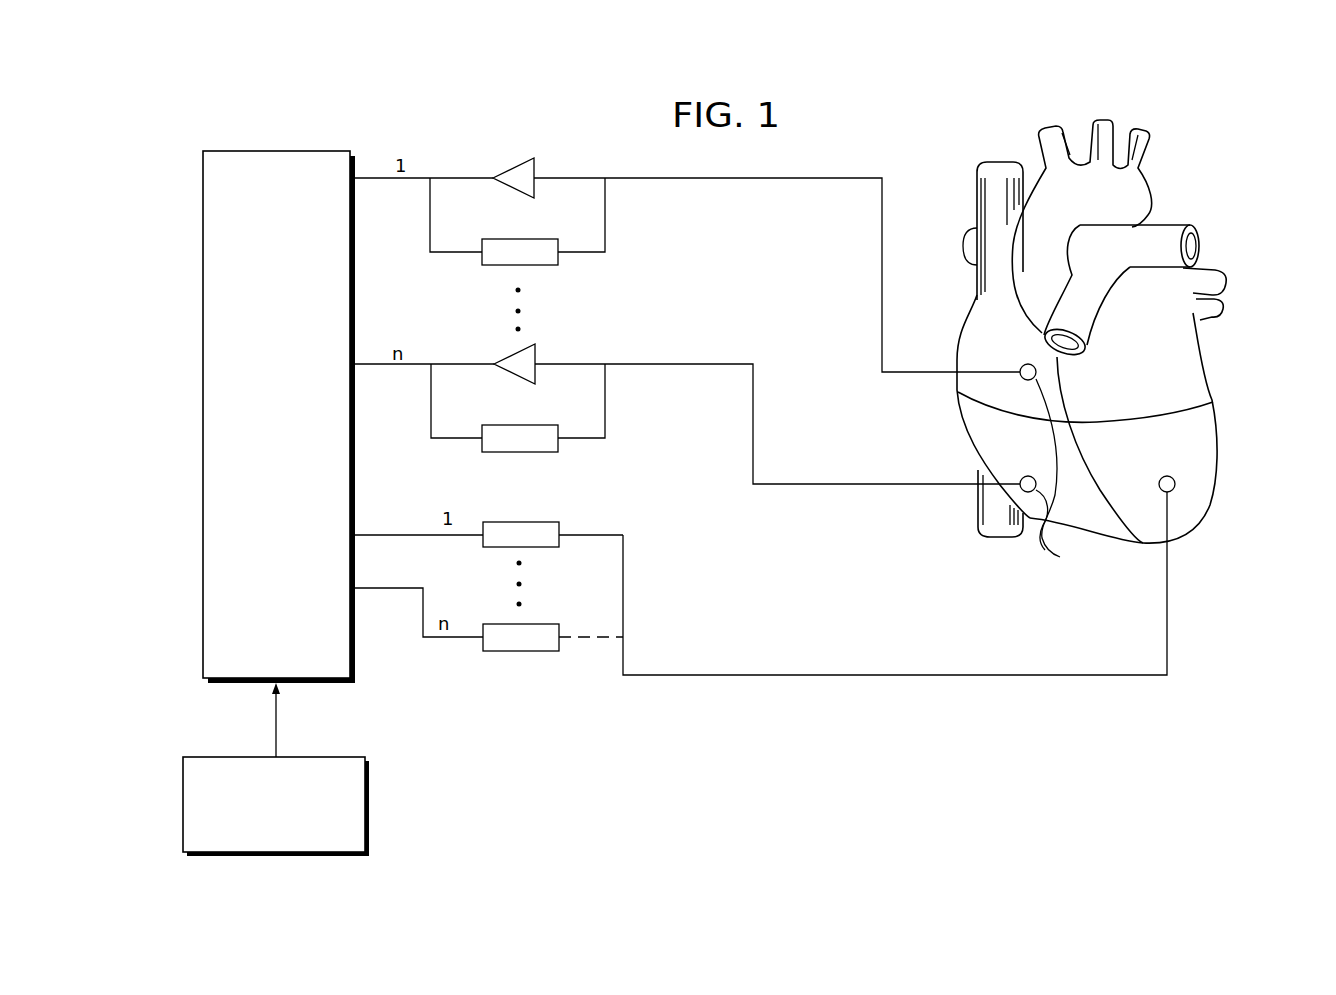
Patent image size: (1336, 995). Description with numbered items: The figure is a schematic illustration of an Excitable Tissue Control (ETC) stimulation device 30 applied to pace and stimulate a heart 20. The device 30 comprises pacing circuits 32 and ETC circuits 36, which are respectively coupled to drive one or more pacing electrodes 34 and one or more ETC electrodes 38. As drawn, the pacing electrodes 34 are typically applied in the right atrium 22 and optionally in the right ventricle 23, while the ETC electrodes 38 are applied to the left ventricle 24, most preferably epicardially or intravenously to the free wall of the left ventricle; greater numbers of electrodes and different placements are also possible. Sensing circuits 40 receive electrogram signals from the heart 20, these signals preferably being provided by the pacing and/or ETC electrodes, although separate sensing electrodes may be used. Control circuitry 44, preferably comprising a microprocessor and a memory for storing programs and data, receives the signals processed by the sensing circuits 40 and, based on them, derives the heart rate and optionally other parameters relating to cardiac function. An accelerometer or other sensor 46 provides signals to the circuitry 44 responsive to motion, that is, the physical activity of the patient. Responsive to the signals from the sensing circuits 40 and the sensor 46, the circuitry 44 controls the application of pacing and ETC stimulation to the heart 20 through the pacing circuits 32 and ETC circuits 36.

The heart 20 is at (1195, 347).
The right atrium 22 is at (1013, 321).
The right ventricle 23 is at (1013, 449).
The left ventricle 24 is at (1147, 462).
The ETC stimulation device 30 is at (250, 135).
The pacing circuits 32 is at (558, 258).
The pacing electrodes 34 is at (811, 373).
The ETC circuits 36 is at (505, 522).
The ETC electrodes 38 is at (1176, 483).
The sensing circuits 40 is at (521, 172).
The control circuitry 44 is at (296, 151).
The accelerometer or other sensor 46 is at (356, 832).